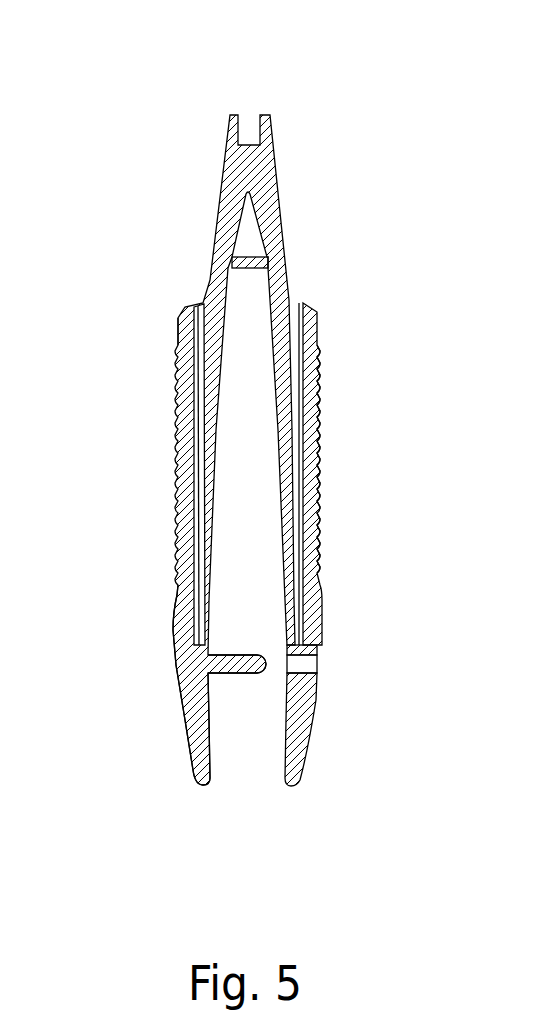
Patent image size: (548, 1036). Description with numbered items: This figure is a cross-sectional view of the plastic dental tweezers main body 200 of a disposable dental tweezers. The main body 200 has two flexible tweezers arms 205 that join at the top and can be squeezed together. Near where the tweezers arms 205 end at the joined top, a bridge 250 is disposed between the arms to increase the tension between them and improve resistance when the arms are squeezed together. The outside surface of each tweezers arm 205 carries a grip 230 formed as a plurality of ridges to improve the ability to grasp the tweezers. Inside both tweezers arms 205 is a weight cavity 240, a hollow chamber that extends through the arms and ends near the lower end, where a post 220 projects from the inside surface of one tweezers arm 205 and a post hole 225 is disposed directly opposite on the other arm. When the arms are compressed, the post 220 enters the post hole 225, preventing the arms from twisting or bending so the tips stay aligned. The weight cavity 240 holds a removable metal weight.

The dental tweezers main body 200 is at (302, 92).
The tweezers arms 205 is at (187, 600).
The post 220 is at (233, 670).
The post hole 225 is at (308, 667).
The grip 230 is at (318, 492).
The weight cavity 240 is at (300, 303).
The bridge 250 is at (248, 260).